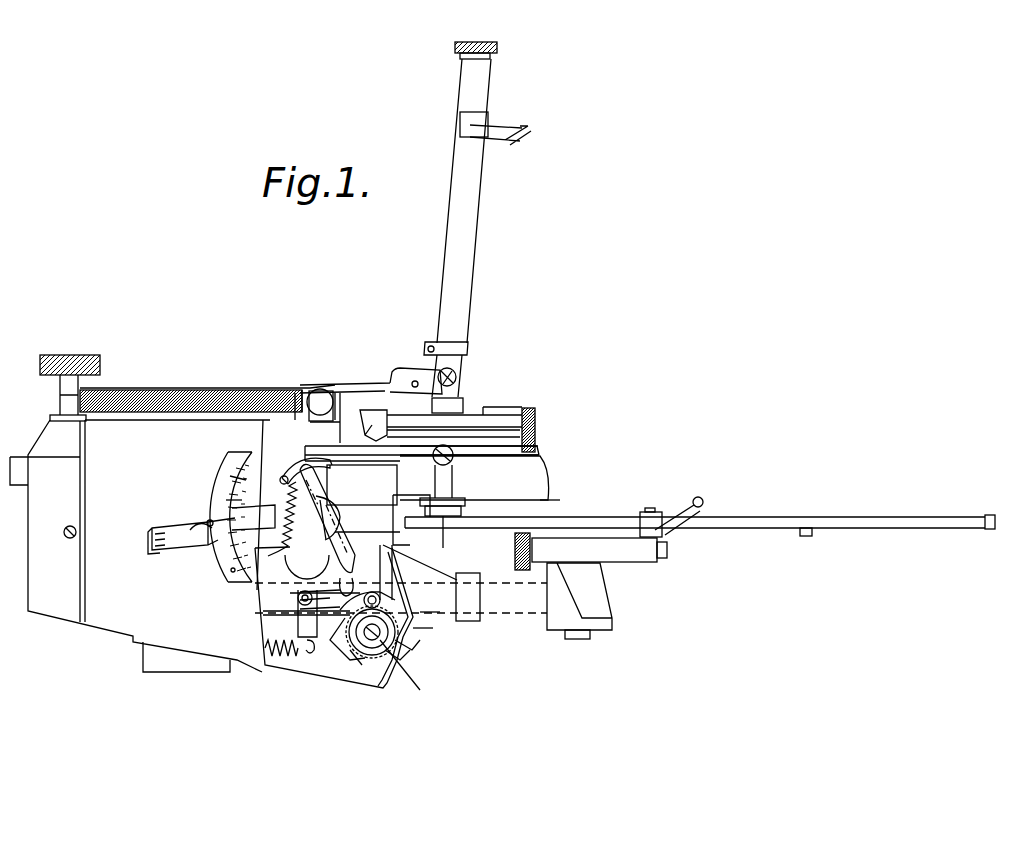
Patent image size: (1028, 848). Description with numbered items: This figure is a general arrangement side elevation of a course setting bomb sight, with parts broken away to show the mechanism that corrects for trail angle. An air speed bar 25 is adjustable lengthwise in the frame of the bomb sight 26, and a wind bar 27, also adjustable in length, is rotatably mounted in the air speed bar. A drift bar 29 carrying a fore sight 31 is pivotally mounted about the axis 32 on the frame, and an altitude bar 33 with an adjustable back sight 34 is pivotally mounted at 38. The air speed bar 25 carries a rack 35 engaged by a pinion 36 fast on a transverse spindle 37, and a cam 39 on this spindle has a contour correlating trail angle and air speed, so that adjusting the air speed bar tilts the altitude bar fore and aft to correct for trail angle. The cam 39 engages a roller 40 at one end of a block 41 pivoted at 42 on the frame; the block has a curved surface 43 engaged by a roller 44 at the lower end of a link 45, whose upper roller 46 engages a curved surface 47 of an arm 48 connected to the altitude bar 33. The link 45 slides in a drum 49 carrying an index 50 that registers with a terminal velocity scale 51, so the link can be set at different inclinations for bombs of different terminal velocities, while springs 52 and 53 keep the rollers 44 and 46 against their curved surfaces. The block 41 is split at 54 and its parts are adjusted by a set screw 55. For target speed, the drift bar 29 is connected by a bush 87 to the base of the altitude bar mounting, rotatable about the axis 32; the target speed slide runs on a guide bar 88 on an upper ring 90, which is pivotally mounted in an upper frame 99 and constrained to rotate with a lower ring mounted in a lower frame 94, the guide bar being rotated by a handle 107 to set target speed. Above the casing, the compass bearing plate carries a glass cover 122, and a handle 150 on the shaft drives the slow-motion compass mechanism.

The handle 150 is at (78, 354).
The glass cover 122 is at (152, 390).
The arm 48 is at (268, 430).
The altitude bar 33 is at (476, 290).
The back sight 34 is at (498, 143).
The guide bar 88 is at (470, 416).
The upper ring 90 is at (480, 432).
The handle 107 is at (533, 410).
The upper frame 99 is at (538, 453).
The lower frame 94 is at (548, 477).
The bush 87 is at (557, 504).
The pivotal mounting 38 is at (455, 462).
The axis 32 is at (449, 526).
The curved surface 43 is at (385, 590).
The drift bar 29 is at (738, 517).
The fore sight 31 is at (695, 500).
The wind bar 27 is at (628, 562).
The air speed bar 25 is at (520, 602).
The set screw 55 is at (466, 584).
The frame of the bomb sight 26 is at (415, 616).
The rack 35 is at (415, 620).
The roller 40 is at (410, 645).
The pinion 36 is at (398, 655).
The transverse spindle 37 is at (385, 662).
The block 41 is at (347, 642).
The cam 39 is at (300, 672).
The spring 52 is at (263, 643).
The pivot 42 is at (330, 598).
The split 54 is at (340, 607).
The roller 44 is at (340, 590).
The link 45 is at (228, 568).
The index 50 is at (205, 522).
The terminal velocity scale 51 is at (228, 500).
The spring 53 is at (232, 478).
The roller 46 is at (286, 468).
The drum 49 is at (323, 530).
The curved surface 47 is at (362, 484).